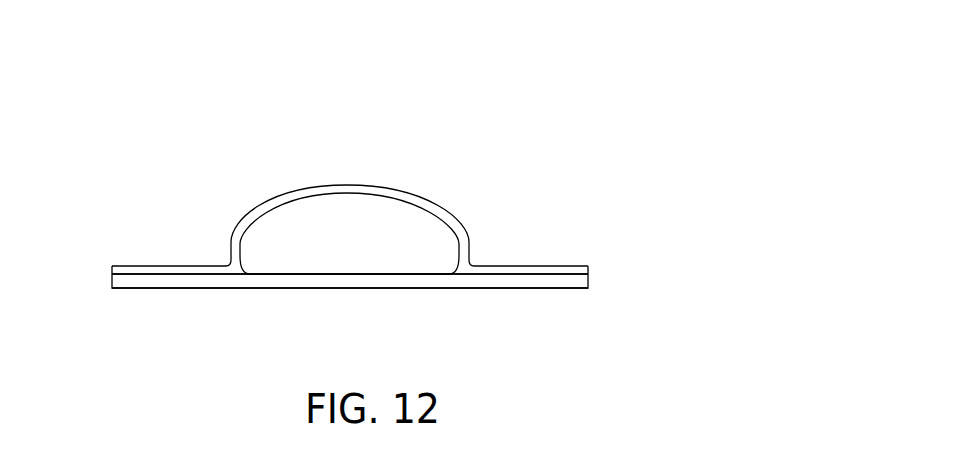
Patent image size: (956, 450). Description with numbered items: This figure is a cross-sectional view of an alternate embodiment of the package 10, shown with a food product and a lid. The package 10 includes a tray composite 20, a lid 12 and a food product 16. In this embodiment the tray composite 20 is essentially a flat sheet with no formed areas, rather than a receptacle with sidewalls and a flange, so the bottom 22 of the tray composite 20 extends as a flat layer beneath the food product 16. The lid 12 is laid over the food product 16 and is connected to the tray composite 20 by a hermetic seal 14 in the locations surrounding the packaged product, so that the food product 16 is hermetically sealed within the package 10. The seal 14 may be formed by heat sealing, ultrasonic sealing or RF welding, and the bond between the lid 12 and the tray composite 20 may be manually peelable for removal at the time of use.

The package 10 is at (545, 70).
The lid 12 is at (131, 268).
The seal 14 is at (568, 275).
The food product 16 is at (352, 218).
The tray composite 20 is at (438, 296).
The bottom 22 is at (222, 288).